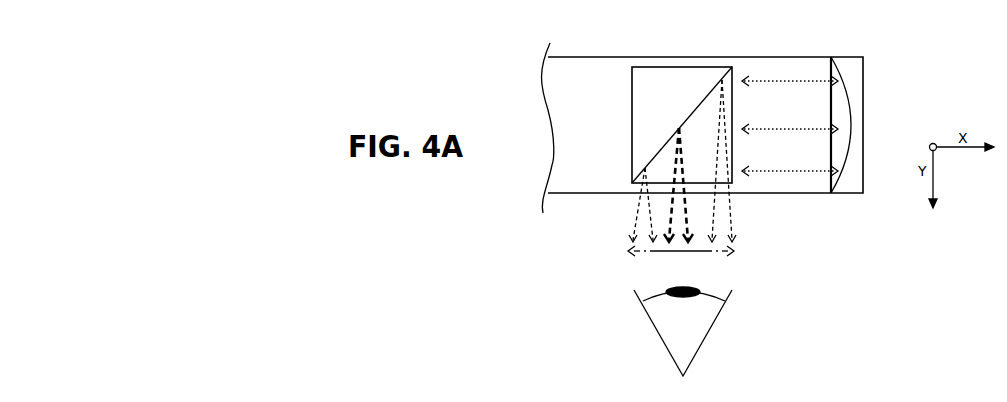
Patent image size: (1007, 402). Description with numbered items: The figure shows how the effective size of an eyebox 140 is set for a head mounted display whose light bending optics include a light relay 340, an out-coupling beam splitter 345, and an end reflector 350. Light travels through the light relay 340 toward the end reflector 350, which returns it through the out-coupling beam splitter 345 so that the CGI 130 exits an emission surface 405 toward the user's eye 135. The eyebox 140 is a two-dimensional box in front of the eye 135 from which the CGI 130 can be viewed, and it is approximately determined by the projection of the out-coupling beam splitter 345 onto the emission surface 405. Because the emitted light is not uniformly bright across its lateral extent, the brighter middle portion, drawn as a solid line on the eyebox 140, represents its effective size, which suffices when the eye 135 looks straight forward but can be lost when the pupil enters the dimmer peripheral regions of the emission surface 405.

The light relay 340 is at (573, 57).
The out-coupling beam splitter 345 is at (669, 91).
The end reflector 350 is at (863, 93).
The emission surface 405 is at (733, 193).
The CGI 130 is at (614, 238).
The eyebox 140 is at (736, 254).
The eye 135 is at (692, 325).